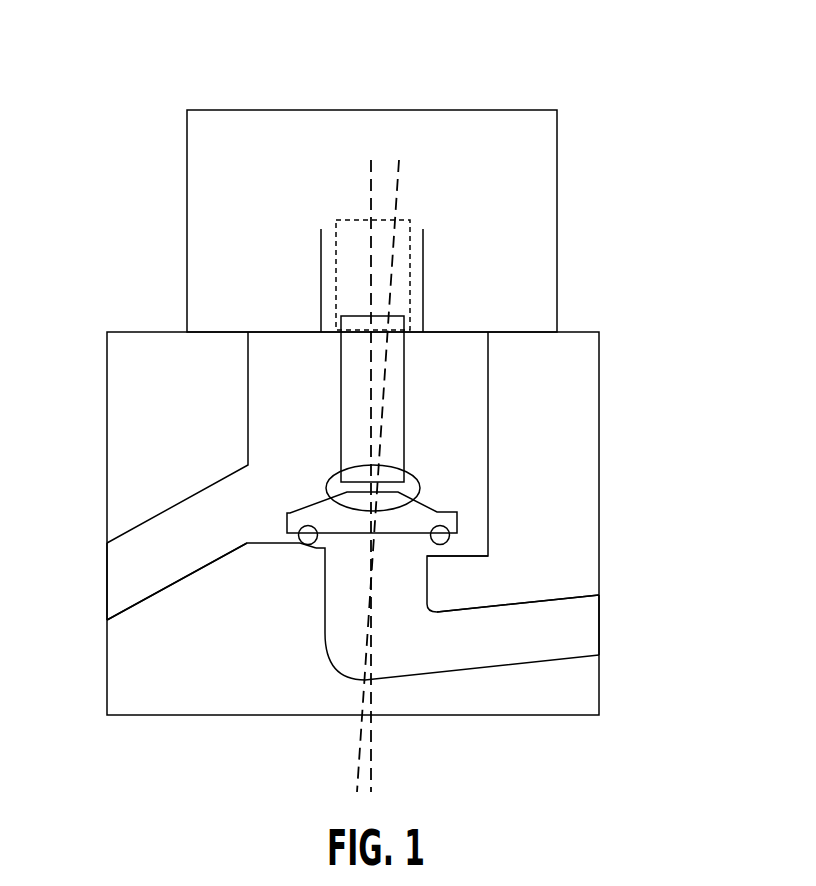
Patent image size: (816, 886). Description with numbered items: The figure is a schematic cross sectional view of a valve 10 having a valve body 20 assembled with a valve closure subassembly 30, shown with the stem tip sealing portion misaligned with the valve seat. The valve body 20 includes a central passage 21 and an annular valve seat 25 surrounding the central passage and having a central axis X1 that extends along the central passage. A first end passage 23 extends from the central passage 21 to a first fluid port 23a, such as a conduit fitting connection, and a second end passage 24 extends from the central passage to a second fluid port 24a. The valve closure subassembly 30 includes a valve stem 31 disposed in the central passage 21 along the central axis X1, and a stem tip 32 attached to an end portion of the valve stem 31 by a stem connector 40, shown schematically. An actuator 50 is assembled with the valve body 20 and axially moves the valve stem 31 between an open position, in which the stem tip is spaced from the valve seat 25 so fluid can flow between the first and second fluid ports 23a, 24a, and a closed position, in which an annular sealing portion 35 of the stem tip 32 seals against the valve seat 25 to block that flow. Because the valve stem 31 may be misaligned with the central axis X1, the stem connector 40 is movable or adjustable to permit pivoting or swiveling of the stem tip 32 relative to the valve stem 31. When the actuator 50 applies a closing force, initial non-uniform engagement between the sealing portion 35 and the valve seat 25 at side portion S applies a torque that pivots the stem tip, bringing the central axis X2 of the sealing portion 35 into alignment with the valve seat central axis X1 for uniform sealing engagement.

The valve 10 is at (695, 118).
The valve body 20 is at (582, 379).
The central passage 21 is at (450, 480).
The first end passage 23 is at (220, 557).
The first fluid port 23a is at (82, 578).
The second end passage 24 is at (517, 605).
The second fluid port 24a is at (618, 623).
The annular valve seat 25 is at (473, 556).
The valve closure subassembly 30 is at (312, 368).
The valve stem 31 is at (398, 405).
The stem tip 32 is at (435, 512).
The annular sealing portion 35 is at (447, 554).
The stem connector 40 is at (330, 470).
The actuator 50 is at (527, 182).
The side portion S is at (308, 546).
The central axis of the valve seat X1 is at (365, 760).
The central axis of the sealing portion X2 is at (375, 757).